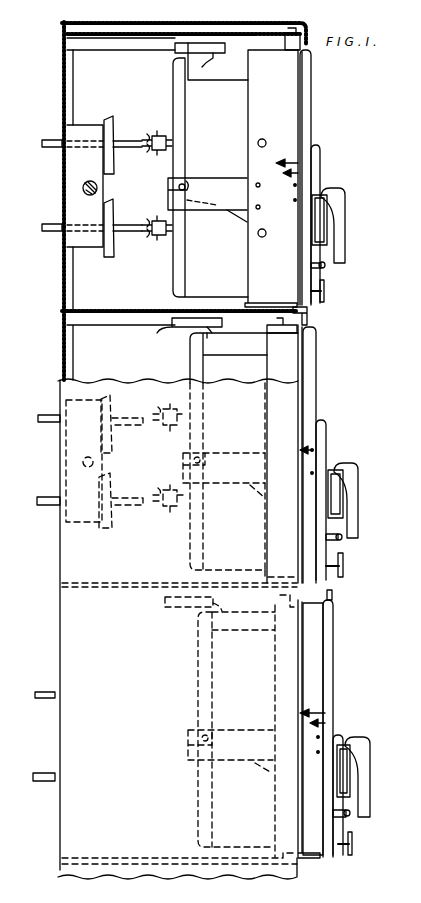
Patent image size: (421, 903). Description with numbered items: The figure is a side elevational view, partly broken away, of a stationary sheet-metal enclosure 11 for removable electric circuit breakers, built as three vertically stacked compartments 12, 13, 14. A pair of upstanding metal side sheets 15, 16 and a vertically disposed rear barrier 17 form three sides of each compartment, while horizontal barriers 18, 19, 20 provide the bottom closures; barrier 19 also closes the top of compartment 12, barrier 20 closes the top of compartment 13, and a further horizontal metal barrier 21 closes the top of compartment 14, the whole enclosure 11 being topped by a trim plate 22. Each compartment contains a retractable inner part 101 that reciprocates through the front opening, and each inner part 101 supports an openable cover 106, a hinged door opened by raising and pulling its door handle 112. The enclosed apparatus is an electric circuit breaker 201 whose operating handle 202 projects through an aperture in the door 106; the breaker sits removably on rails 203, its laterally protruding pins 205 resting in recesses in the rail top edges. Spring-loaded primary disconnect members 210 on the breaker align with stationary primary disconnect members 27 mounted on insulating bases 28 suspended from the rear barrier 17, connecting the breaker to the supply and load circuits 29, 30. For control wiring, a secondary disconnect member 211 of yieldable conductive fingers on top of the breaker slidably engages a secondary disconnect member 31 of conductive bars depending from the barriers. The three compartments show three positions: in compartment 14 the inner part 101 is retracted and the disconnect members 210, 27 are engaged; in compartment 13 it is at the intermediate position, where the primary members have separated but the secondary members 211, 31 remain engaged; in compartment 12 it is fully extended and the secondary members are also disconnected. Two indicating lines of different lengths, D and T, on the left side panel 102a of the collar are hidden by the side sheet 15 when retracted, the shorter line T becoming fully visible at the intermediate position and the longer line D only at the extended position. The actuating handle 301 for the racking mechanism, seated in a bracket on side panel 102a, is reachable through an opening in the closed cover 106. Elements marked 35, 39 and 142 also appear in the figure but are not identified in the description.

The stationary sheet-metal enclosure 11 is at (44, 598).
The compartment 12 is at (143, 826).
The compartment 13 is at (142, 563).
The compartment 14 is at (139, 294).
The side sheet 15 is at (70, 735).
The side sheet 16 is at (80, 268).
The rear barrier 17 is at (62, 352).
The horizontal barrier 18 is at (72, 858).
The horizontal barrier 19 is at (78, 583).
The horizontal barrier 20 is at (88, 308).
The horizontal metal barrier 21 is at (88, 40).
The trim plate 22 is at (70, 22).
The stationary primary disconnect member 27 is at (126, 142).
The insulating base 28 is at (104, 218).
The supply circuit 29 is at (50, 140).
The load circuit 30 is at (50, 224).
The secondary disconnect member 31 is at (178, 50).
The latch bracket 35 is at (286, 46).
The shutter pivot 39 is at (98, 186).
The retractable inner part 101 is at (337, 112).
The left side panel 102a is at (252, 258).
The openable cover 106 is at (307, 76).
The door handle 112 is at (322, 195).
The pivot pin 142 is at (325, 268).
The electric circuit breaker 201 is at (172, 262).
The operating handle 202 is at (345, 226).
The rail 203 is at (200, 210).
The lug or pin 205 is at (186, 187).
The spring-loaded primary disconnect member 210 is at (152, 170).
The secondary disconnect member 211 is at (203, 60).
The actuating handle 301 is at (325, 293).
The indicating line D is at (291, 162).
The indicating line T is at (291, 176).